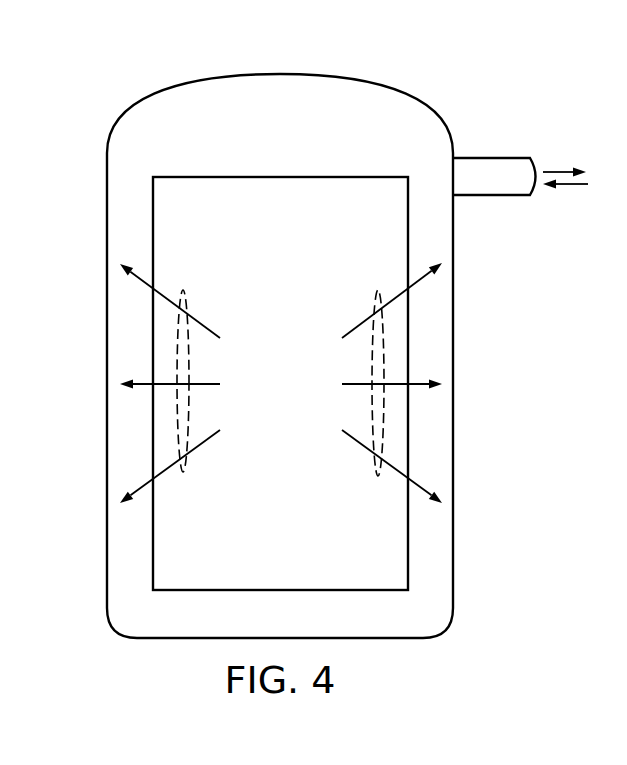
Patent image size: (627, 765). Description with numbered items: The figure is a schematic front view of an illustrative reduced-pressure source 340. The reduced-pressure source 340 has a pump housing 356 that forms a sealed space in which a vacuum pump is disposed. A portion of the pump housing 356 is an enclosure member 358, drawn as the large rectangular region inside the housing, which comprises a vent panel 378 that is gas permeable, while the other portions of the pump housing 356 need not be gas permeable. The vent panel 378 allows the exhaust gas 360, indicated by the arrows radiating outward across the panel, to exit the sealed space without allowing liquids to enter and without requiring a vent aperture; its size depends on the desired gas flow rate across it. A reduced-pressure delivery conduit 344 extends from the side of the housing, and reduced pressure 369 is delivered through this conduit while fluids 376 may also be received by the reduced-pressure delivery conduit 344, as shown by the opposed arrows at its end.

The reduced-pressure source 340 is at (280, 334).
The pump housing 356 is at (386, 88).
The enclosure member 358 is at (280, 176).
The reduced-pressure delivery conduit 344 is at (495, 158).
The reduced pressure 369 is at (557, 170).
The fluids 376 is at (572, 188).
The vent panel 378 is at (302, 398).
The exhaust gas 360 is at (183, 472).